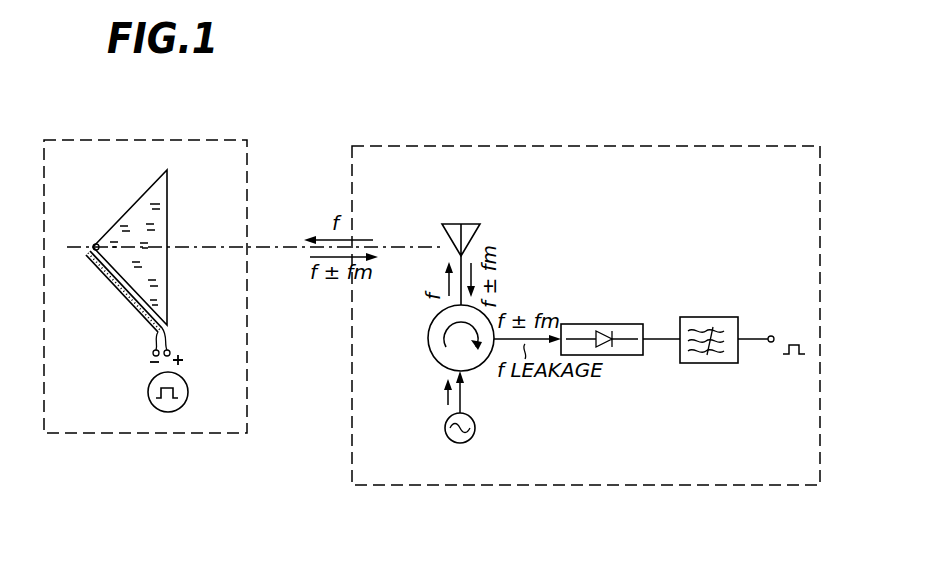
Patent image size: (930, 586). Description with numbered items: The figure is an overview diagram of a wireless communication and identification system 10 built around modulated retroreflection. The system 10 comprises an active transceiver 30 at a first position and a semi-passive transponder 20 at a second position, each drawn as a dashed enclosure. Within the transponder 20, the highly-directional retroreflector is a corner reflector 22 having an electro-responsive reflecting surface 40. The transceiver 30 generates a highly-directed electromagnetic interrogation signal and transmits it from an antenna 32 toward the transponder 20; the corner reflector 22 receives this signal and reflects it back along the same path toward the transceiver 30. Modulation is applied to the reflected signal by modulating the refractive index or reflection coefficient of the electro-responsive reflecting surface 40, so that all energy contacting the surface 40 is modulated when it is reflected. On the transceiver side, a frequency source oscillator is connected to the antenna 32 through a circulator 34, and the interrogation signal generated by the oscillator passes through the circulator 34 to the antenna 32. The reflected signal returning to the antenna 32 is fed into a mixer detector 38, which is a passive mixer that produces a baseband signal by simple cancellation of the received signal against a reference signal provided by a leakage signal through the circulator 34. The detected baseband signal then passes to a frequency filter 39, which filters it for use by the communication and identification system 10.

The wireless communication and identification system 10 is at (301, 114).
The semi-passive transponder 20 is at (190, 140).
The corner reflector 22 is at (150, 205).
The active transceiver 30 is at (630, 146).
The antenna 32 is at (470, 224).
The circulator 34 is at (428, 338).
The mixer detector 38 is at (630, 355).
The frequency filter 39 is at (712, 363).
The electro-responsive reflecting surface 40 is at (130, 306).